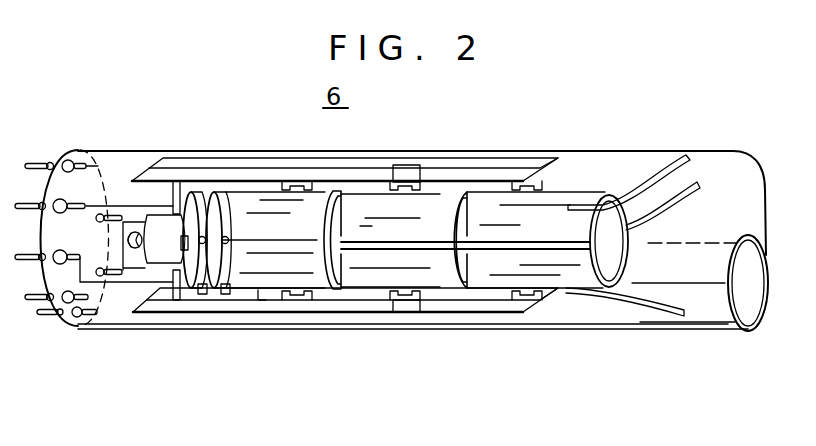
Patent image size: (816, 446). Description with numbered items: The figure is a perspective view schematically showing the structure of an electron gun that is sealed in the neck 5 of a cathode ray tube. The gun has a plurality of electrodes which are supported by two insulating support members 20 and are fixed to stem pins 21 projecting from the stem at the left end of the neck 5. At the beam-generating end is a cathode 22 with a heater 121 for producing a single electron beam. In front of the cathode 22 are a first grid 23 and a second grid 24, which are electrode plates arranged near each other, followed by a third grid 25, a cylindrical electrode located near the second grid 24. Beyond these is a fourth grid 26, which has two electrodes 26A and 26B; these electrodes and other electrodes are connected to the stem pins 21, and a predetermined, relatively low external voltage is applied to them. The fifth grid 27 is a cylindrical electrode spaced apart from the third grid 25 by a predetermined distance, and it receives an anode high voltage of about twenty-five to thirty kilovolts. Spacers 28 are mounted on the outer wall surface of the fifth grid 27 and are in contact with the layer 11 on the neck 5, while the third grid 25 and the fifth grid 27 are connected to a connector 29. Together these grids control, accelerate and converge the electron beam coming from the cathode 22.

The neck 5 is at (447, 330).
The layer 11 is at (680, 324).
The insulating support members 20 is at (258, 167).
The stem pins 21 is at (41, 162).
The cathode 22 is at (186, 256).
The first grid 23 is at (208, 262).
The second grid 24 is at (228, 292).
The third grid 25 is at (270, 270).
The fourth grid 26 is at (360, 272).
The electrode of fourth grid 26A is at (392, 280).
The electrode of fourth grid 26B is at (393, 196).
The fifth grid 27 is at (512, 278).
The spacers 28 is at (645, 183).
The connector 29 is at (468, 300).
The heater 121 is at (132, 250).